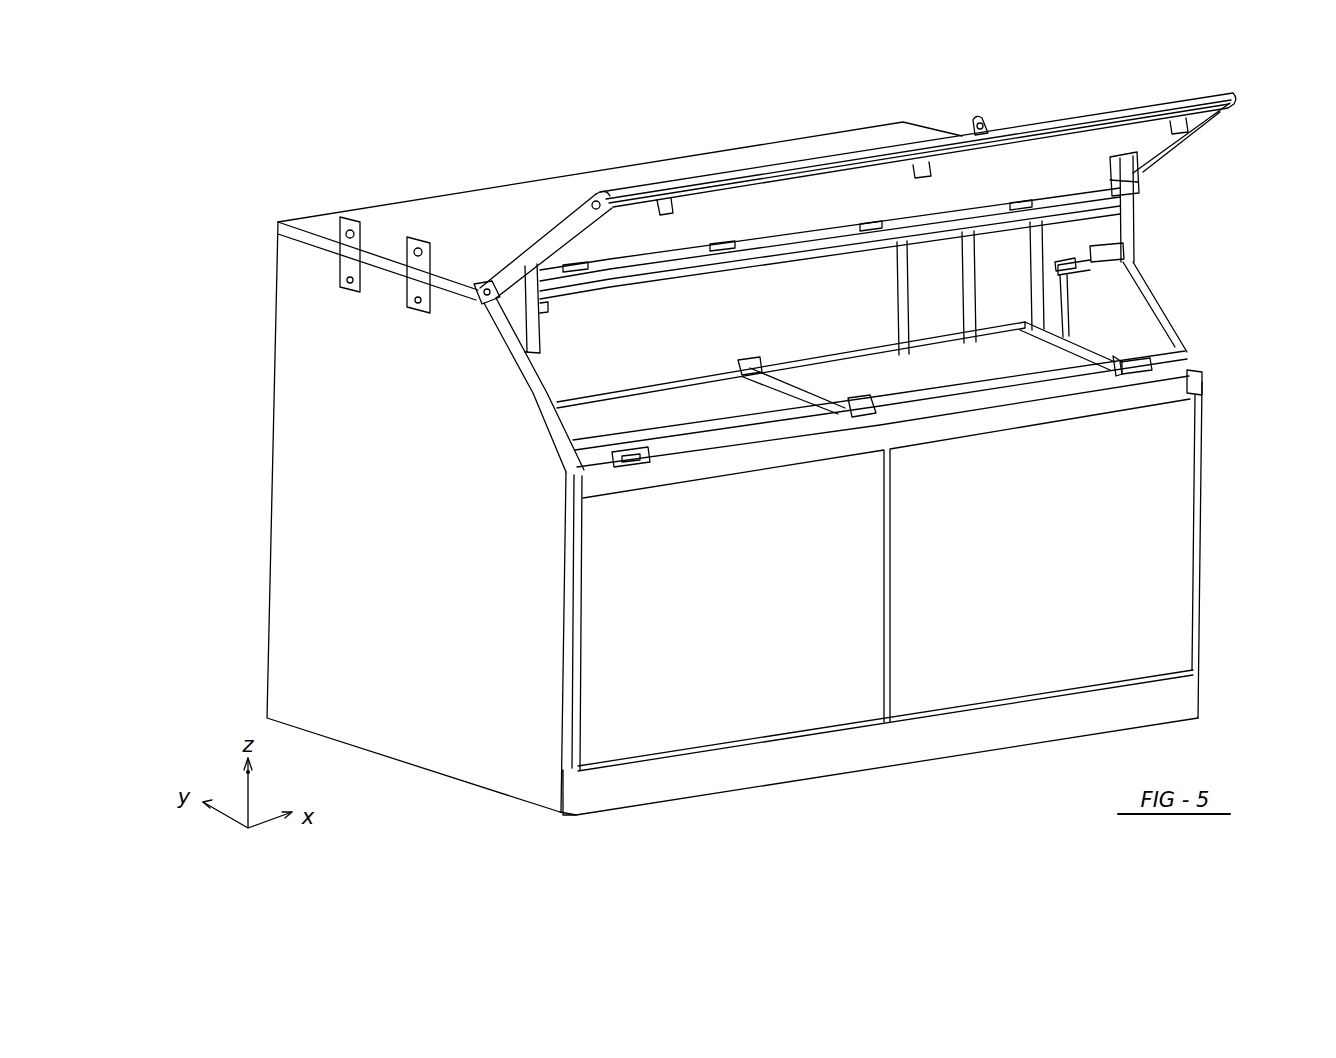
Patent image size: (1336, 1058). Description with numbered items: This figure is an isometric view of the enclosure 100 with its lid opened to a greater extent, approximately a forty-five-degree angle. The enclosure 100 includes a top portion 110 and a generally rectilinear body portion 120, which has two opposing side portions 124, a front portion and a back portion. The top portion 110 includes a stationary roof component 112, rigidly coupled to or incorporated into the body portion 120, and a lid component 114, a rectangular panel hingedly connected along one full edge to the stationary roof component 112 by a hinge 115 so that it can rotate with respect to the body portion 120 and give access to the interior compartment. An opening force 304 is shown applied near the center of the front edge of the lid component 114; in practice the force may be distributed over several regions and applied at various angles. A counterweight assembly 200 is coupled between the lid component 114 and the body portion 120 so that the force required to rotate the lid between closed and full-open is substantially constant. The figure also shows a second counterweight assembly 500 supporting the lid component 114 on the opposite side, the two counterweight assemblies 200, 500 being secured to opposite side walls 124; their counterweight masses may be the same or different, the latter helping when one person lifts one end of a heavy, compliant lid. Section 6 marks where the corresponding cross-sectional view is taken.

The enclosure 100 is at (420, 142).
The top portion 110 is at (990, 108).
The stationary roof component 112 is at (887, 132).
The lid component 114 is at (1200, 92).
The hinge 115 is at (487, 284).
The body portion 120 is at (1226, 548).
The side portion 124 is at (297, 452).
The counterweight assembly 200 is at (572, 330).
The opening force 304 is at (814, 170).
The second counterweight assembly 500 is at (1170, 218).
The section 6 is at (300, 163).